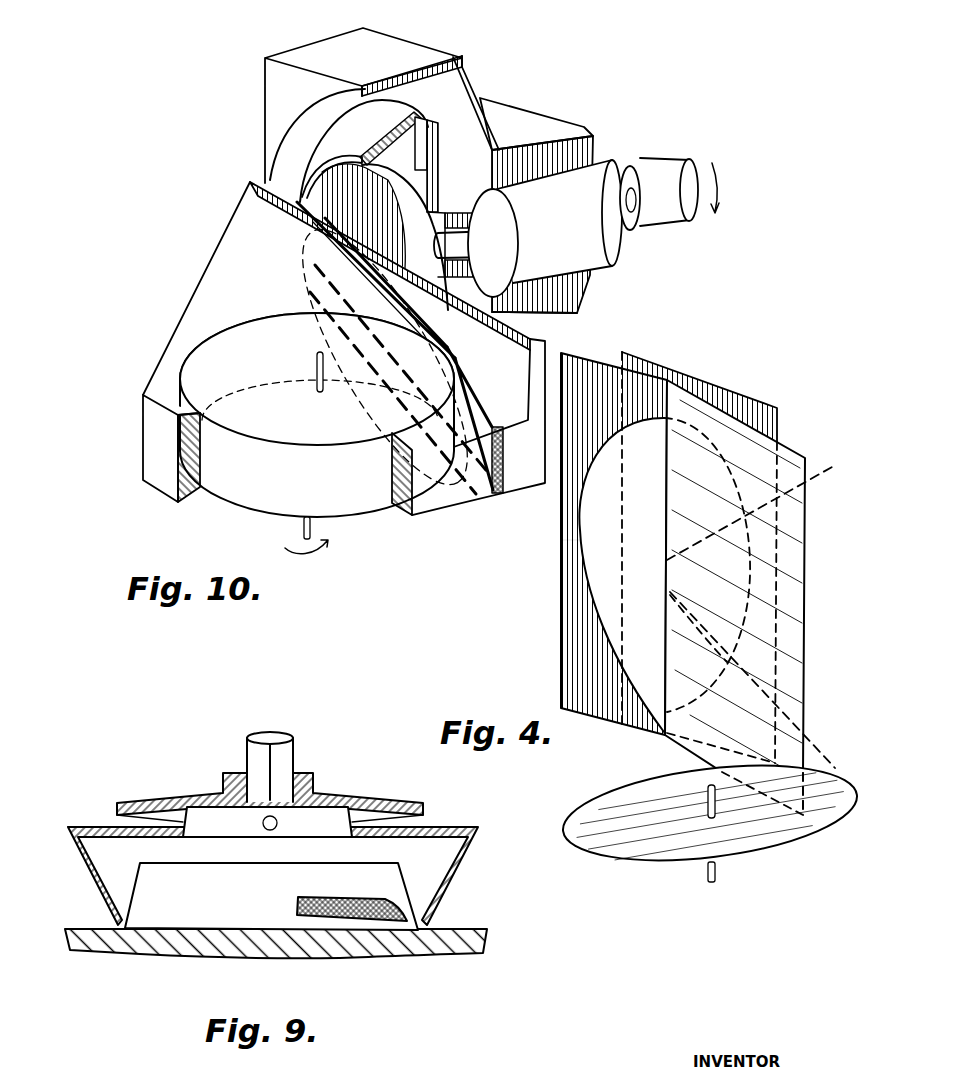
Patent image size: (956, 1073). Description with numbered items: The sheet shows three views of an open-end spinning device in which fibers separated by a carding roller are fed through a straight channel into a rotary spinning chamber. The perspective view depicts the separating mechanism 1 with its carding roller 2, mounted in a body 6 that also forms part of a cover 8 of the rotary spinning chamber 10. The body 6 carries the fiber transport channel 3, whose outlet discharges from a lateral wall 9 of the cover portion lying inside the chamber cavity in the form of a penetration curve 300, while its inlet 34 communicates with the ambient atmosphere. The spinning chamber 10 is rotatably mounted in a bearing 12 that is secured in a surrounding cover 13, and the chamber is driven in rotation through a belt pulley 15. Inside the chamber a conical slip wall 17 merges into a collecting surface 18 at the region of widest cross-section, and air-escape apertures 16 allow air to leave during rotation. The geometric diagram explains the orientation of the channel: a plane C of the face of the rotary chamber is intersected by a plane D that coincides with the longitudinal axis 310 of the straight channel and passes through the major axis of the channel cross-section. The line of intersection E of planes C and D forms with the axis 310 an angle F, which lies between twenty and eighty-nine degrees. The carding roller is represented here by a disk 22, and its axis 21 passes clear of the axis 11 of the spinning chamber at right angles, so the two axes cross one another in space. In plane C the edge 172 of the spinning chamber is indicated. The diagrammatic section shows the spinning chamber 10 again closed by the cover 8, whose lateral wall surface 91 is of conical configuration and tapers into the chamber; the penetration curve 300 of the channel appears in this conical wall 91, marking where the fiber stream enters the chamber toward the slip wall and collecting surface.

In FIG. 10, the separating mechanism 1 is at (172, 398).
In FIG. 10, the carding roller 2 is at (192, 368).
In FIG. 10, the fiber transport channel 3 is at (433, 323).
In FIG. 10, the body 6 is at (547, 351).
In FIG. 10, the cover 8 is at (325, 170).
In FIG. 9, the cover 8 is at (80, 942).
In FIG. 10, the lateral wall 9 is at (320, 188).
In FIG. 10, the rotary spinning chamber 10 is at (386, 101).
In FIG. 9, the rotary spinning chamber 10 is at (333, 797).
In FIG. 4, the axis of the spinning chamber 11 is at (812, 477).
In FIG. 10, the bearing 12 is at (604, 178).
In FIG. 10, the cover 13 is at (583, 293).
In FIG. 10, the belt pulley 15 is at (673, 213).
In FIG. 10, the air-escape apertures 16 is at (428, 137).
In FIG. 10, the conical slip wall 17 is at (387, 153).
In FIG. 10, the collecting surface 18 is at (428, 116).
In FIG. 4, the axis of the carding roller 21 is at (717, 870).
In FIG. 4, the disk 22 is at (627, 800).
In FIG. 10, the inlet 34 is at (503, 472).
In FIG. 9, the lateral wall surface 91 is at (390, 877).
In FIG. 4, the edge 172 is at (560, 540).
In FIG. 10, the penetration curve 300 is at (305, 243).
In FIG. 9, the penetration curve 300 is at (390, 917).
In FIG. 4, the longitudinal axis 310 is at (812, 745).
In FIG. 4, the plane of the face of the rotary chamber C is at (750, 402).
In FIG. 4, the plane D is at (800, 553).
In FIG. 4, the intersection E is at (667, 380).
In FIG. 4, the angle F is at (678, 613).